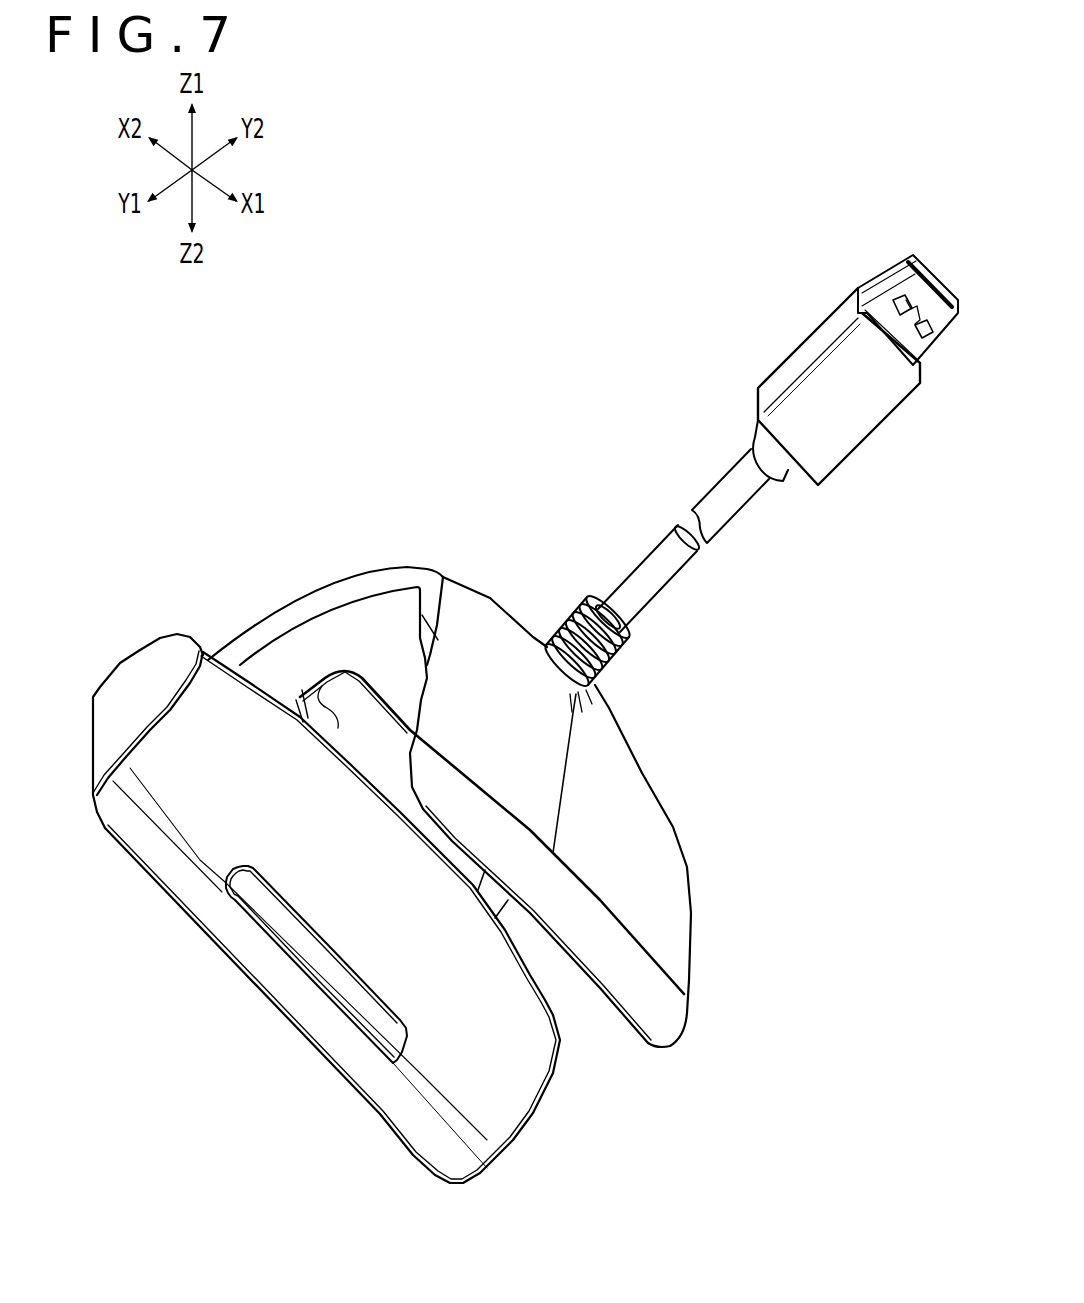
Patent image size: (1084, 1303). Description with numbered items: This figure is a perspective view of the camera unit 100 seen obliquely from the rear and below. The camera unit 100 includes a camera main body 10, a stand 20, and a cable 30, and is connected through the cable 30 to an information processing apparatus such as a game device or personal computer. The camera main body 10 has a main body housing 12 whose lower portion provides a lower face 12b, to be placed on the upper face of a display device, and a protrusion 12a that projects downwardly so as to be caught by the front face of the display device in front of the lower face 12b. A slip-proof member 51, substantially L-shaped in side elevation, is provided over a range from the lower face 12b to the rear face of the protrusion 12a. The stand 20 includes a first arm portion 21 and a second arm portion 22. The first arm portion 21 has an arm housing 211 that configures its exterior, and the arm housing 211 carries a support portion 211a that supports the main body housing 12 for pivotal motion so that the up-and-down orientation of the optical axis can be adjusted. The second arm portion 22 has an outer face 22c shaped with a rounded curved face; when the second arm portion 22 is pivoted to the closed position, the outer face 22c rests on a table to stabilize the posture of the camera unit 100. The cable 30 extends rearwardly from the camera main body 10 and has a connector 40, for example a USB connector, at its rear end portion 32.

The camera unit 100 is at (525, 392).
The camera main body 10 is at (116, 648).
The main body housing 12 is at (94, 745).
The protrusion 12a is at (357, 1042).
The lower face 12b is at (507, 1130).
The slip-proof member 51 is at (355, 992).
The stand 20 is at (372, 560).
The first arm portion 21 is at (250, 633).
The arm housing 211 is at (303, 597).
The support portion 211a is at (330, 710).
The second arm portion 22 is at (677, 843).
The outer face 22c is at (613, 787).
The cable 30 is at (641, 553).
The rear end portion 32 is at (858, 447).
The connector 40 is at (935, 268).